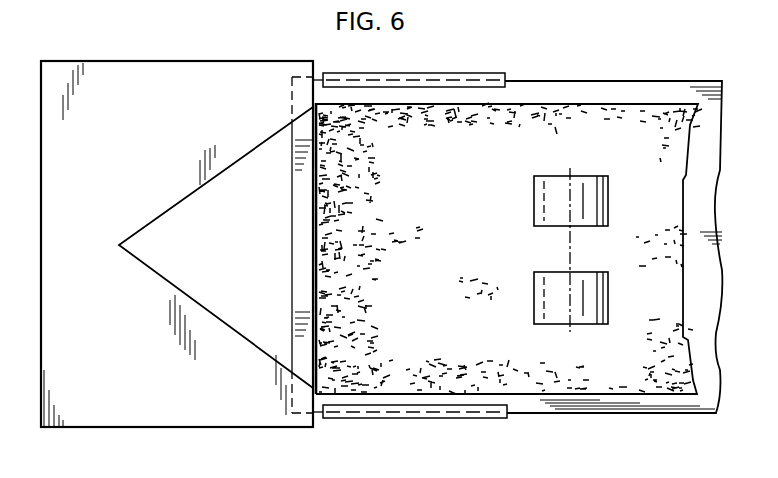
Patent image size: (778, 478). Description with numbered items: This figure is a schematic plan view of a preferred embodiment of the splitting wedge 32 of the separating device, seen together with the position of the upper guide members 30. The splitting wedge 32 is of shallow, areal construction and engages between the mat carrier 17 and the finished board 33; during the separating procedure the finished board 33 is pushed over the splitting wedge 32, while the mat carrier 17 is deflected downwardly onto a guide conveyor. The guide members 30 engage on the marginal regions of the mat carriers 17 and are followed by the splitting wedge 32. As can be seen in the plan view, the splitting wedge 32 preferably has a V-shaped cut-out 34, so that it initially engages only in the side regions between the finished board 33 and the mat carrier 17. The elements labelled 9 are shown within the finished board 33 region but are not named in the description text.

The pressure vessel / cylinder 9 is at (534, 190).
The mat carrier 17 is at (300, 220).
The upper guide member 30 is at (458, 73).
The splitting wedge 32 is at (121, 82).
The finished board 33 is at (552, 118).
The V-shaped cut-out 34 is at (188, 268).